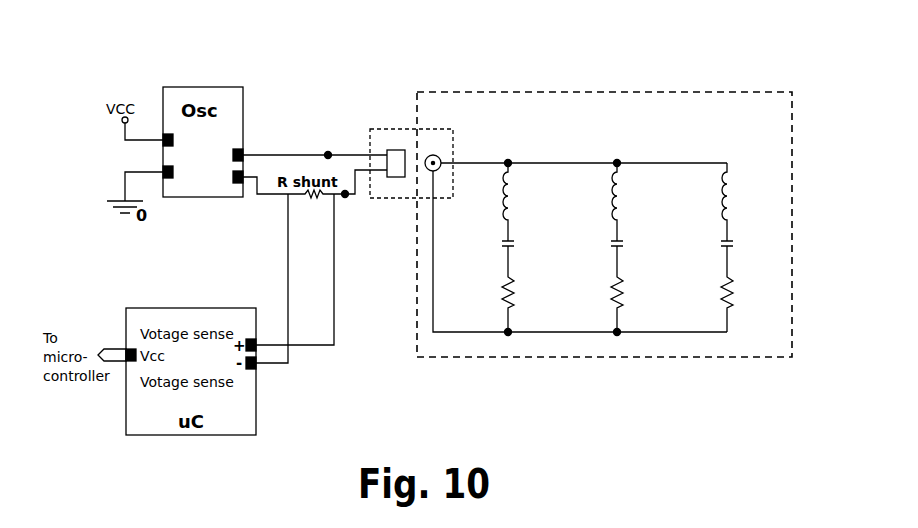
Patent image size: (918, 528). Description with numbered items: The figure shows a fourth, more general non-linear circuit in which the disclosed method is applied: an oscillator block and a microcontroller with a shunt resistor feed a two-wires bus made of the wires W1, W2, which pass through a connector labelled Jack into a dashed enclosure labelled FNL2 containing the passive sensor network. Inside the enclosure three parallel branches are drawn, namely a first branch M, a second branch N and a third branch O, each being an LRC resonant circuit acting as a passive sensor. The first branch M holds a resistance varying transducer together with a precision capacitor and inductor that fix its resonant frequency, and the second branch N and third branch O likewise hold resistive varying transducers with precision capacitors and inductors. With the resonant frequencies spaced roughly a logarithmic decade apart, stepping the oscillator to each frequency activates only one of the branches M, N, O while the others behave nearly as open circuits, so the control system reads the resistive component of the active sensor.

The bus wire W1 is at (328, 152).
The bus wire W2 is at (345, 197).
The jack connector Jack is at (425, 125).
The filter network load FNL2 is at (604, 193).
The first branch M is at (531, 264).
The second branch N is at (636, 264).
The third branch O is at (744, 264).